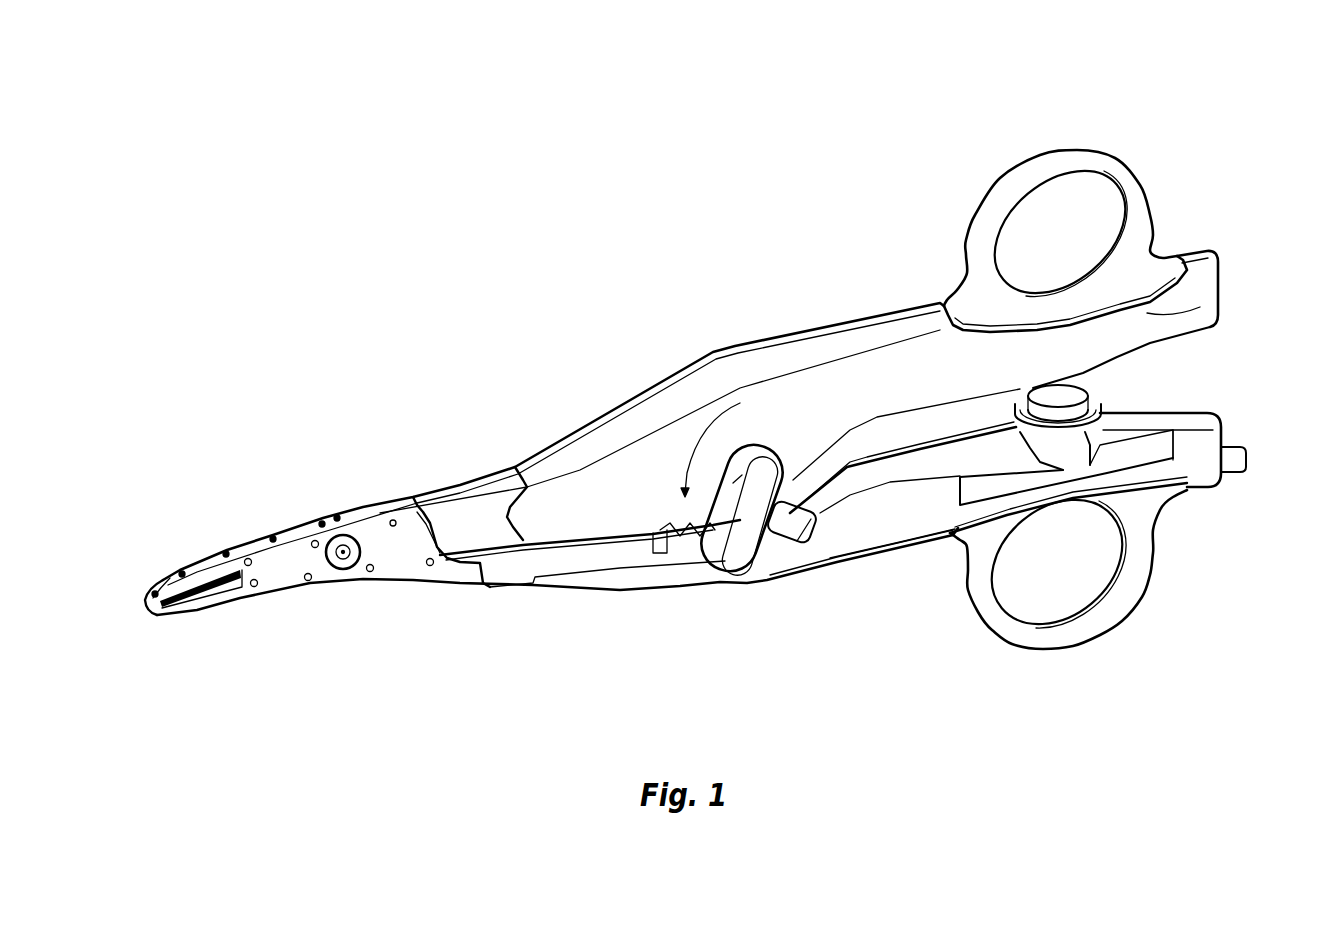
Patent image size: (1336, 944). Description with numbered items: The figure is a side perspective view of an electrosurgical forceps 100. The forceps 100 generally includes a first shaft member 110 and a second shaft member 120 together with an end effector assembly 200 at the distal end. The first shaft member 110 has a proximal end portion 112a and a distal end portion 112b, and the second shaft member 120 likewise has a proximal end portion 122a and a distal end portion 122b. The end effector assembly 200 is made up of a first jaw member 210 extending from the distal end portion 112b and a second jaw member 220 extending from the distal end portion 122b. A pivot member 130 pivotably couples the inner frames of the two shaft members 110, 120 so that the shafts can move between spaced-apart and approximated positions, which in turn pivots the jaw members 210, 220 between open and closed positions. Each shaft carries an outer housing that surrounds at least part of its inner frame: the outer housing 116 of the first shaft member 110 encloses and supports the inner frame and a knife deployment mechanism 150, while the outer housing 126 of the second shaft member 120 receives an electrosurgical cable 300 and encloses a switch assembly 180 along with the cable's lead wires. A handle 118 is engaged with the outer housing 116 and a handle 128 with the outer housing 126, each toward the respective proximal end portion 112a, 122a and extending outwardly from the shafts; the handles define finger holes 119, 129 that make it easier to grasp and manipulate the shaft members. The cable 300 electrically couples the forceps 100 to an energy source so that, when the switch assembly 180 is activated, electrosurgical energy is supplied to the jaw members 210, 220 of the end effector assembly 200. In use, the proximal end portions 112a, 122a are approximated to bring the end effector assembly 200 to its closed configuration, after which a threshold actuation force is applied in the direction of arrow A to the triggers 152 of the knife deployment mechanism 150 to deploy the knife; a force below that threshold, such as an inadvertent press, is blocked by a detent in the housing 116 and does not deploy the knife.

The forceps 100 is at (601, 264).
The first shaft member 110 is at (799, 318).
The proximal end portion of first shaft member 112a is at (1183, 307).
The distal end portion of first shaft member 112b is at (420, 507).
The outer housing of first shaft member 116 is at (903, 353).
The handle of first shaft member 118 is at (1062, 158).
The finger hole of first handle 119 is at (1103, 208).
The second shaft member 120 is at (870, 563).
The proximal end portion of second shaft member 122a is at (1200, 481).
The distal end portion of second shaft member 122b is at (507, 580).
The outer housing of second shaft member 126 is at (910, 533).
The handle of second shaft member 128 is at (1140, 556).
The finger hole of second handle 129 is at (1092, 584).
The pivot member 130 is at (334, 565).
The knife deployment mechanism 150 is at (765, 446).
The triggers 152 is at (770, 572).
The switch assembly 180 is at (1094, 389).
The end effector assembly 200 is at (128, 583).
The first jaw member 210 is at (198, 594).
The second jaw member 220 is at (163, 577).
The electrosurgical cable 300 is at (1246, 453).